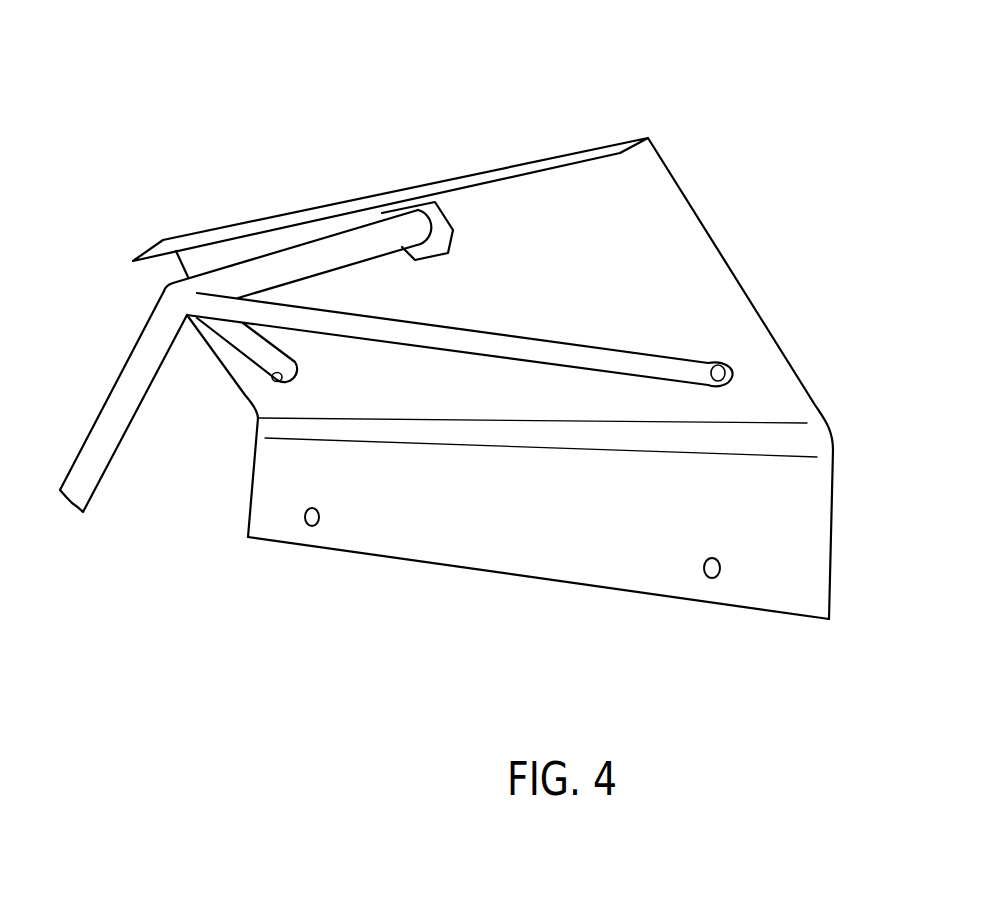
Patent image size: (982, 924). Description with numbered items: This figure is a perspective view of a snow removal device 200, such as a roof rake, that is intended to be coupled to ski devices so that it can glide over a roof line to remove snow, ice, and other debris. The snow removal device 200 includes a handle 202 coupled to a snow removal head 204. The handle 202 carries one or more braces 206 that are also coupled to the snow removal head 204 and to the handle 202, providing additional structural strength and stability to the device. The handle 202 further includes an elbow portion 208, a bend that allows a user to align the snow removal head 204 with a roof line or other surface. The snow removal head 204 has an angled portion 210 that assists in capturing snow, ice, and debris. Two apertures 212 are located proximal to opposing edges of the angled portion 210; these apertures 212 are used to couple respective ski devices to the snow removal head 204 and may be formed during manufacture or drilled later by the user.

The snow removal device 200 is at (327, 72).
The handle 202 is at (97, 447).
The snow removal head 204 is at (740, 277).
The braces 206 is at (240, 342).
The elbow portion 208 is at (170, 287).
The angled portion 210 is at (522, 568).
The apertures 212 is at (305, 527).